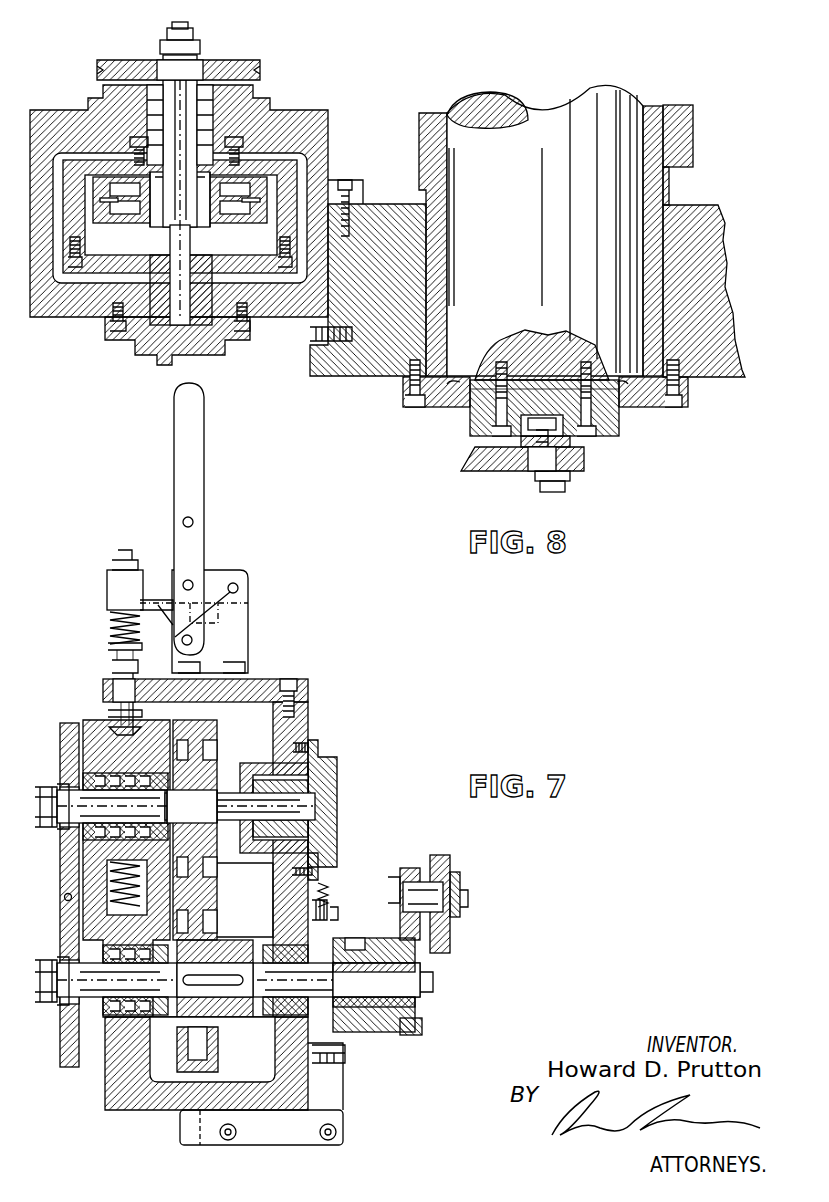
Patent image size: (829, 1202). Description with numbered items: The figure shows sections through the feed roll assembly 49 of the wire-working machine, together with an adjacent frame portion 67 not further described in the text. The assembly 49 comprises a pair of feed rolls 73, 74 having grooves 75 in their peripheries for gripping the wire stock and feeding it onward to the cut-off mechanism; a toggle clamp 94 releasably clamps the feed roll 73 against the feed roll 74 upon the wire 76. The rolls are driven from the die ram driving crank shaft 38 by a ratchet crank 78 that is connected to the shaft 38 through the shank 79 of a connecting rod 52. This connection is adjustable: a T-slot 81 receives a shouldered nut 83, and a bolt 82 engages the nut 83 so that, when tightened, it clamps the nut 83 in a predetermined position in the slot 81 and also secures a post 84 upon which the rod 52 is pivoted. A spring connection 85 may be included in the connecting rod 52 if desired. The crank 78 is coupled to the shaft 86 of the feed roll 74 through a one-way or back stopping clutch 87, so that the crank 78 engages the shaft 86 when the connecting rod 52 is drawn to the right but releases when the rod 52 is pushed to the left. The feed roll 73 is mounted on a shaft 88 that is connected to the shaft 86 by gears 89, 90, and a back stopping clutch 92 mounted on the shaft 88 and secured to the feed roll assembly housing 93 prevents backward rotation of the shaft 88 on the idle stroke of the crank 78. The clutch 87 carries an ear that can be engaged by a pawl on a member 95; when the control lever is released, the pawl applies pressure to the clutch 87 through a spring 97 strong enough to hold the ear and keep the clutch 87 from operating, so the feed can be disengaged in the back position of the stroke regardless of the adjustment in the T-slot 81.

In FIG. 8, the die ram driving crank shaft 38 is at (524, 137).
In FIG. 8, the feed roll assembly 49 is at (100, 327).
In FIG. 7, the feed roll assembly 49 is at (118, 1120).
In FIG. 8, the connecting rod 52 is at (505, 471).
In FIG. 8, the frame block 67 is at (695, 140).
In FIG. 8, the feed roll 73 is at (205, 56).
In FIG. 7, the feed roll 73 is at (62, 862).
In FIG. 7, the feed roll 74 is at (62, 932).
In FIG. 8, the grooves 75 is at (255, 72).
In FIG. 7, the grooves 75 is at (68, 725).
In FIG. 7, the wire 76 is at (63, 897).
In FIG. 7, the ratchet crank 78 is at (400, 920).
In FIG. 7, the shank 79 is at (450, 937).
In FIG. 8, the T-slot 81 is at (600, 410).
In FIG. 8, the bolt 82 is at (566, 484).
In FIG. 8, the shouldered nut 83 is at (563, 430).
In FIG. 8, the post 84 is at (521, 441).
In FIG. 8, the spring connection 85 is at (254, 222).
In FIG. 7, the shaft 86 is at (287, 977).
In FIG. 7, the one-way clutch 87 is at (390, 1035).
In FIG. 8, the shaft 88 is at (163, 210).
In FIG. 7, the shaft 88 is at (217, 850).
In FIG. 7, the gear 89 is at (217, 880).
In FIG. 7, the gear 90 is at (217, 920).
In FIG. 7, the back stopping clutch 92 is at (268, 763).
In FIG. 7, the feed roll assembly housing 93 is at (308, 722).
In FIG. 7, the toggle clamp 94 is at (206, 527).
In FIG. 7, the member 95 is at (345, 1052).
In FIG. 7, the spring 97 is at (325, 887).